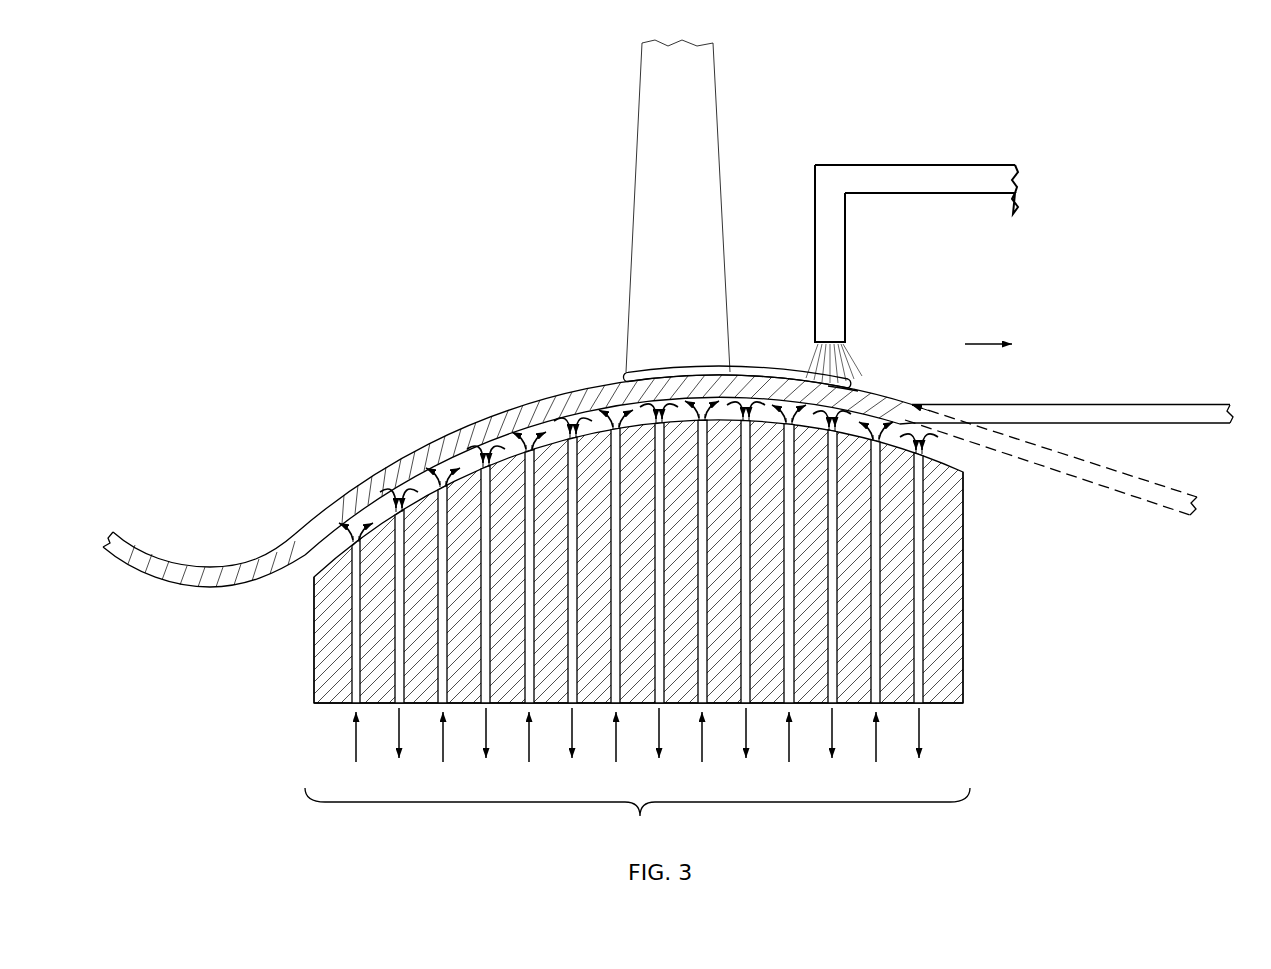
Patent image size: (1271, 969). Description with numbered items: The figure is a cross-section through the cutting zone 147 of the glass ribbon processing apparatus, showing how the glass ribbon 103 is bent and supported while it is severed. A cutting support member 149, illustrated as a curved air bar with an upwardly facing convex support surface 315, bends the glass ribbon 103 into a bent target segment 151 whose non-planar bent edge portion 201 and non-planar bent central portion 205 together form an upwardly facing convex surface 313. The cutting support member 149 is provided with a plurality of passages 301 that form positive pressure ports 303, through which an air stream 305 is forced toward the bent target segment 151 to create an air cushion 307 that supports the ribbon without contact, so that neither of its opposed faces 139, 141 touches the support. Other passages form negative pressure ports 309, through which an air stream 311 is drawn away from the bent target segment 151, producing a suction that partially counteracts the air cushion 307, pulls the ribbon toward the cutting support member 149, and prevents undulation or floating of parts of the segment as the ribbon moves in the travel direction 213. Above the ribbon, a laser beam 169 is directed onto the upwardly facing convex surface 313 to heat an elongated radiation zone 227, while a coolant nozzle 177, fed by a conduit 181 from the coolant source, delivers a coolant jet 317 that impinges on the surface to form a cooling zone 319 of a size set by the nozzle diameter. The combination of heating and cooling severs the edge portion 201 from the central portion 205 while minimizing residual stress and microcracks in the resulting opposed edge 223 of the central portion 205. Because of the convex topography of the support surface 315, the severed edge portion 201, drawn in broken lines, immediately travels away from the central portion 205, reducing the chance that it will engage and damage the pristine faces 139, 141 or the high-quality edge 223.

The glass ribbon 103 is at (193, 565).
The face of the glass ribbon 139 is at (1070, 398).
The face of the glass ribbon 141 is at (1117, 425).
The cutting zone 147 is at (637, 818).
The cutting support member 149 is at (966, 645).
The bent target segment 151 is at (507, 449).
The laser beam 169 is at (684, 114).
The coolant nozzle 177 is at (845, 283).
The conduit 181 is at (948, 165).
The non-planar bent edge portion 201 is at (1147, 503).
The non-planar bent central portion 205 is at (1075, 398).
The travel direction 213 is at (988, 343).
The opposed edge of the central portion 223 is at (1207, 405).
The elongated radiation zone 227 is at (681, 374).
The passages 301 is at (656, 558).
The positive pressure ports 303 is at (880, 545).
The air stream 305 is at (673, 751).
The air cushion 307 is at (312, 562).
The negative pressure ports 309 is at (930, 517).
The air stream 311 is at (921, 722).
The upwardly facing convex surface 313 is at (526, 393).
The upwardly facing convex support surface 315 is at (409, 478).
The coolant jet 317 is at (809, 365).
The cooling zone 319 is at (830, 382).